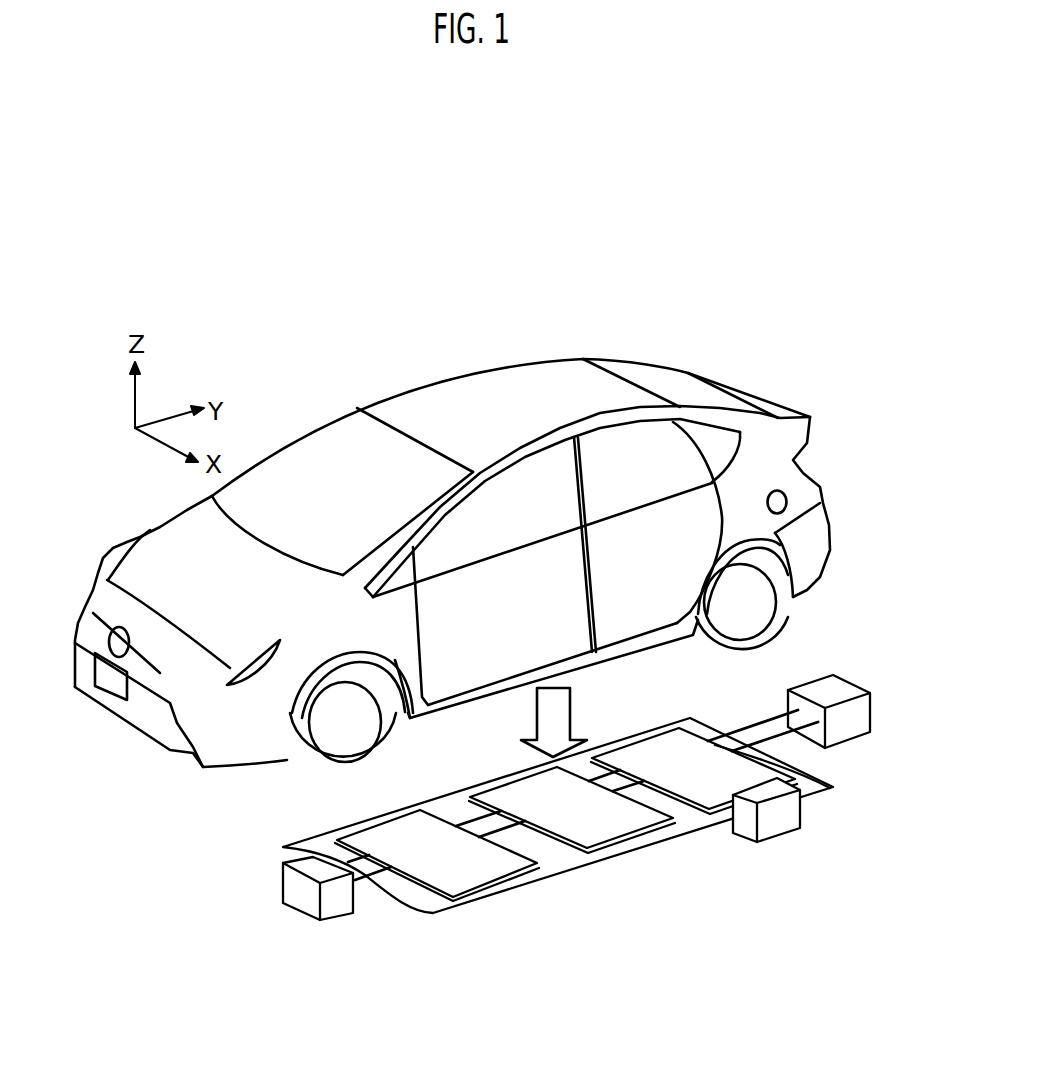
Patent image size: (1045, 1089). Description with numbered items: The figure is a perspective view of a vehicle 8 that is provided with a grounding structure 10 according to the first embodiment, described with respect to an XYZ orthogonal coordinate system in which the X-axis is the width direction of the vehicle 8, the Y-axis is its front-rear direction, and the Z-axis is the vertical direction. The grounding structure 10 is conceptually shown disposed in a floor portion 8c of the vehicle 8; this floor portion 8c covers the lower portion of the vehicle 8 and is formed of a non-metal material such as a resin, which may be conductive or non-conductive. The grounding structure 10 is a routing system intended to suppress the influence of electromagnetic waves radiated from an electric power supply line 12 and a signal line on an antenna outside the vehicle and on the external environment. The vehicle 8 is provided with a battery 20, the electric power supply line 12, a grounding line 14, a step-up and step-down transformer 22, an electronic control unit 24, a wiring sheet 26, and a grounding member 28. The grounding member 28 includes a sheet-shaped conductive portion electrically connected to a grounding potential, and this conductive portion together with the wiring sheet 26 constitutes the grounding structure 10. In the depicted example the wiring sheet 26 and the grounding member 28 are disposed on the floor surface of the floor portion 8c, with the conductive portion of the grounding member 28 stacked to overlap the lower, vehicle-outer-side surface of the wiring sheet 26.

The vehicle 8 is at (640, 353).
The floor portion 8c is at (497, 897).
The grounding structure 10 is at (599, 820).
The electric power supply line 12 is at (777, 733).
The grounding line 14 is at (737, 730).
The battery 20 is at (857, 718).
The step-up and step-down transformer 22 is at (338, 918).
The electronic control unit 24 is at (777, 838).
The wiring sheet 26 is at (420, 817).
The grounding member 28 is at (447, 897).